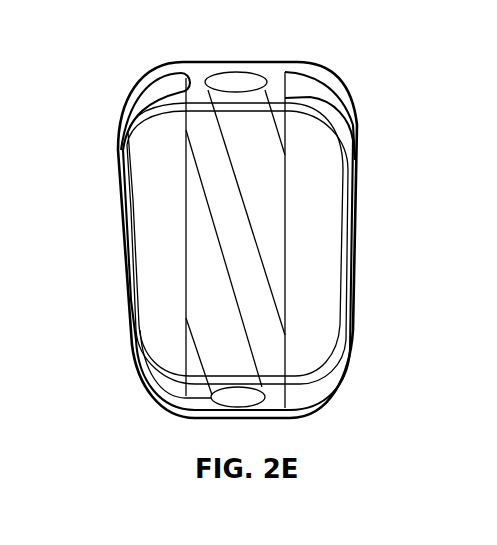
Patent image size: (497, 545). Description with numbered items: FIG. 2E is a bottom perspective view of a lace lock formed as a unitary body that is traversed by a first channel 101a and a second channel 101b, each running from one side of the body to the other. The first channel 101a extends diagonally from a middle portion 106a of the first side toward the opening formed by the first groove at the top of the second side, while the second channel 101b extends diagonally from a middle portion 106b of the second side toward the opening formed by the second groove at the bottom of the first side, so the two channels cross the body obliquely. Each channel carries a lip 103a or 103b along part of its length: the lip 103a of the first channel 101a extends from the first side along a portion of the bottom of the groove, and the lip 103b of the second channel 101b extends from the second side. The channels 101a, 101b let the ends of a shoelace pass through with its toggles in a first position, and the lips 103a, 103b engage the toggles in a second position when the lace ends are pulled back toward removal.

The first channel 101a is at (217, 336).
The second channel 101b is at (257, 162).
The lip 103a is at (153, 217).
The lip 103b is at (273, 268).
The middle portion 106a is at (237, 400).
The middle portion 106b is at (236, 84).